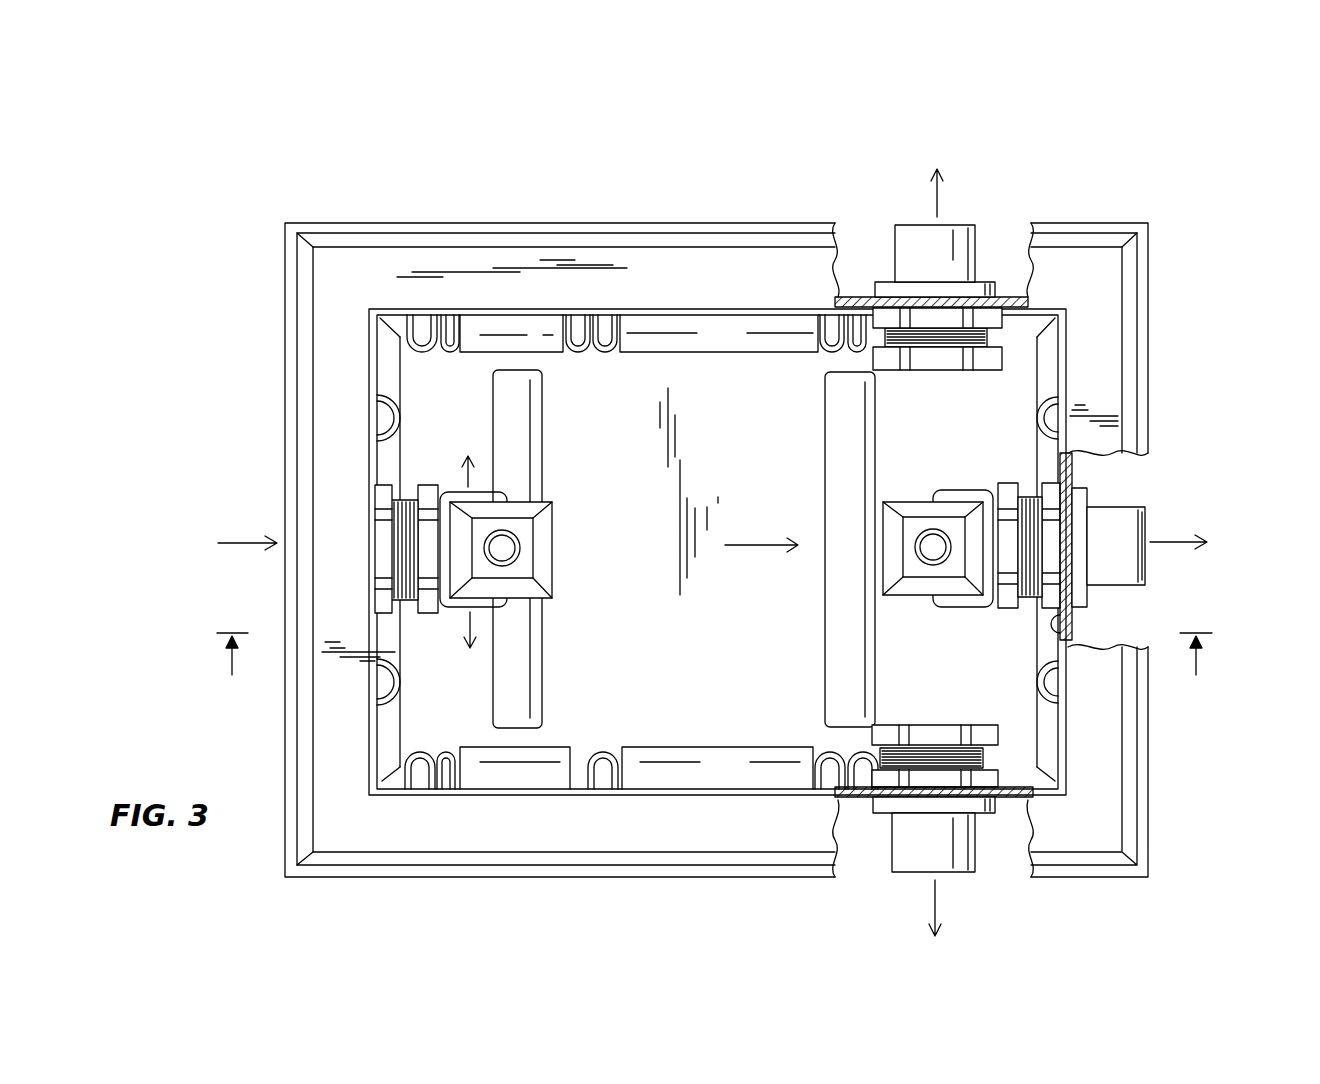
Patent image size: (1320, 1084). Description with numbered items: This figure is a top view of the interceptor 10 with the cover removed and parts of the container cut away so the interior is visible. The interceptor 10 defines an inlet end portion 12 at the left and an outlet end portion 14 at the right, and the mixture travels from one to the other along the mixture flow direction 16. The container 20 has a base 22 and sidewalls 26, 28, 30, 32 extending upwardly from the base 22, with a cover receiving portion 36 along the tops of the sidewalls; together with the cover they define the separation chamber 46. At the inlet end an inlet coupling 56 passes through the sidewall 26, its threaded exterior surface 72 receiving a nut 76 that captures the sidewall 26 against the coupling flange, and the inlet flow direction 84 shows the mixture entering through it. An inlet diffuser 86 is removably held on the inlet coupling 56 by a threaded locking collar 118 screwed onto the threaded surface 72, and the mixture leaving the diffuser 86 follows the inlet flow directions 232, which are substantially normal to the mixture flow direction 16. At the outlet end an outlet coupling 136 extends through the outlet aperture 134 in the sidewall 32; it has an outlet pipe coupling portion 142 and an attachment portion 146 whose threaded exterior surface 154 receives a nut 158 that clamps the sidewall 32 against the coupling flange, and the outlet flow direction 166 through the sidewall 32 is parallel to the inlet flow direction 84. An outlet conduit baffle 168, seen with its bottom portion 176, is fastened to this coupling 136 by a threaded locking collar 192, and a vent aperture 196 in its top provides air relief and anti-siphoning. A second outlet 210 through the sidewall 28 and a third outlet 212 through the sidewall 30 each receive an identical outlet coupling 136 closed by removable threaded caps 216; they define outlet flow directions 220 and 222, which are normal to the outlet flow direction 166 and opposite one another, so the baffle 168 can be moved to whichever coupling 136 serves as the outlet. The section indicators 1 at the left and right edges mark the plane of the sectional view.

The section line 1 is at (714, 672).
The interceptor 10 is at (1148, 114).
The inlet end portion 12 is at (302, 185).
The outlet end portion 14 is at (1047, 183).
The mixture flow direction 16 is at (760, 545).
The container 20 is at (1148, 758).
The base 22 is at (670, 653).
The sidewall 26 is at (383, 727).
The sidewall 28 is at (672, 338).
The sidewall 30 is at (713, 781).
The sidewall 32 is at (1040, 744).
The cover receiving portion 36 is at (413, 265).
The separation chamber 46 is at (585, 387).
The inlet coupling 56 is at (409, 485).
The threaded exterior surface 72 is at (408, 613).
The nut 76 is at (386, 540).
The inlet flow direction 84 is at (240, 543).
The inlet diffuser 86 is at (553, 540).
The locking collar 118 is at (427, 487).
The outlet aperture 134 is at (1147, 520).
The outlet coupling 136 is at (893, 232).
The outlet pipe coupling portion 142 is at (980, 238).
The attachment portion 146 is at (1033, 485).
The threaded exterior surface 154 is at (988, 335).
The nut 158 is at (1005, 610).
The outlet flow direction 166 is at (1205, 542).
The outlet conduit baffle 168 is at (917, 502).
The bottom portion 176 is at (1068, 627).
The locking collar 192 is at (1000, 487).
The vent aperture 196 is at (930, 550).
The second outlet 210 is at (960, 235).
The third outlet 212 is at (898, 872).
The threaded caps 216 is at (902, 373).
The outlet flow direction 220 is at (937, 200).
The outlet flow direction 222 is at (937, 897).
The inlet flow directions 232 is at (468, 474).